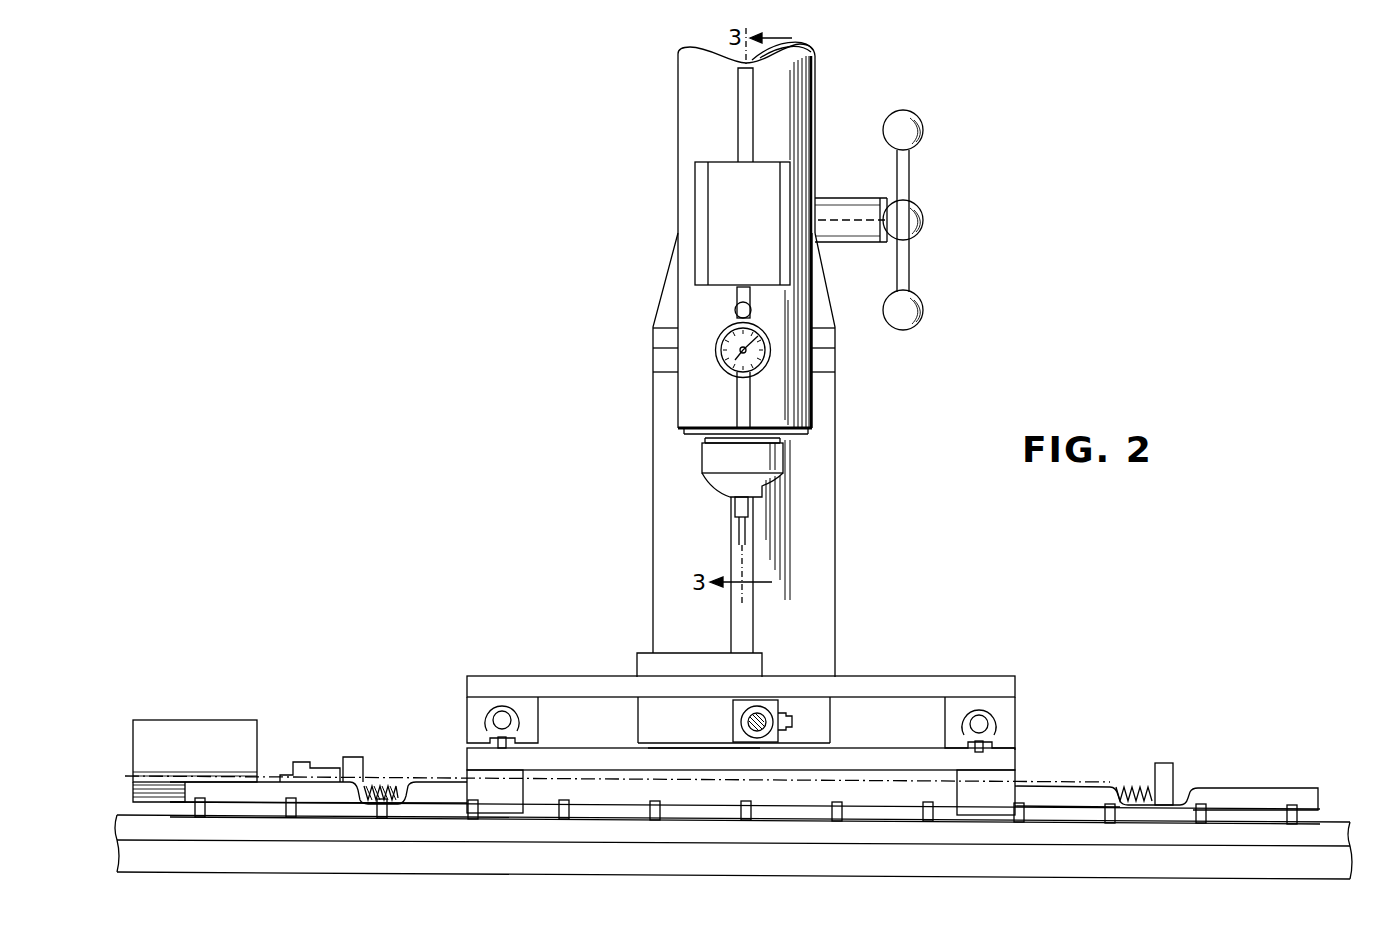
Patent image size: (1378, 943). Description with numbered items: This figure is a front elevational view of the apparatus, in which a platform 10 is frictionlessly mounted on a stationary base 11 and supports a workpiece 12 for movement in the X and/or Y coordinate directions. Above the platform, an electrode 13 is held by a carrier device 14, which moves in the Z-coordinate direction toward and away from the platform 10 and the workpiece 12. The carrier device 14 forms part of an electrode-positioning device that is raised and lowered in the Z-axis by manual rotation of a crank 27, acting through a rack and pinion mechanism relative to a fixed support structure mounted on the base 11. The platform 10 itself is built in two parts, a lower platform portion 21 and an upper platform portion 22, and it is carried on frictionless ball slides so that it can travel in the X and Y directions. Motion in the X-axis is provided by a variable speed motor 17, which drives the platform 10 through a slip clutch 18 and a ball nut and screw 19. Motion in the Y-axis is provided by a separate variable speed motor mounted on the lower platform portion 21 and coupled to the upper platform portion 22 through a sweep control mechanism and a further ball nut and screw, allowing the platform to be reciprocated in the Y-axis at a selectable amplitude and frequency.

The platform 10 is at (744, 725).
The stationary base 11 is at (1338, 822).
The workpiece 12 is at (648, 663).
The electrode 13 is at (740, 543).
The carrier device 14 is at (730, 487).
The variable speed motor 17 is at (208, 751).
The slip clutch 18 is at (325, 771).
The screw 19 is at (382, 782).
The lower platform portion 21 is at (1003, 767).
The upper platform portion 22 is at (977, 683).
The crank 27 is at (922, 129).